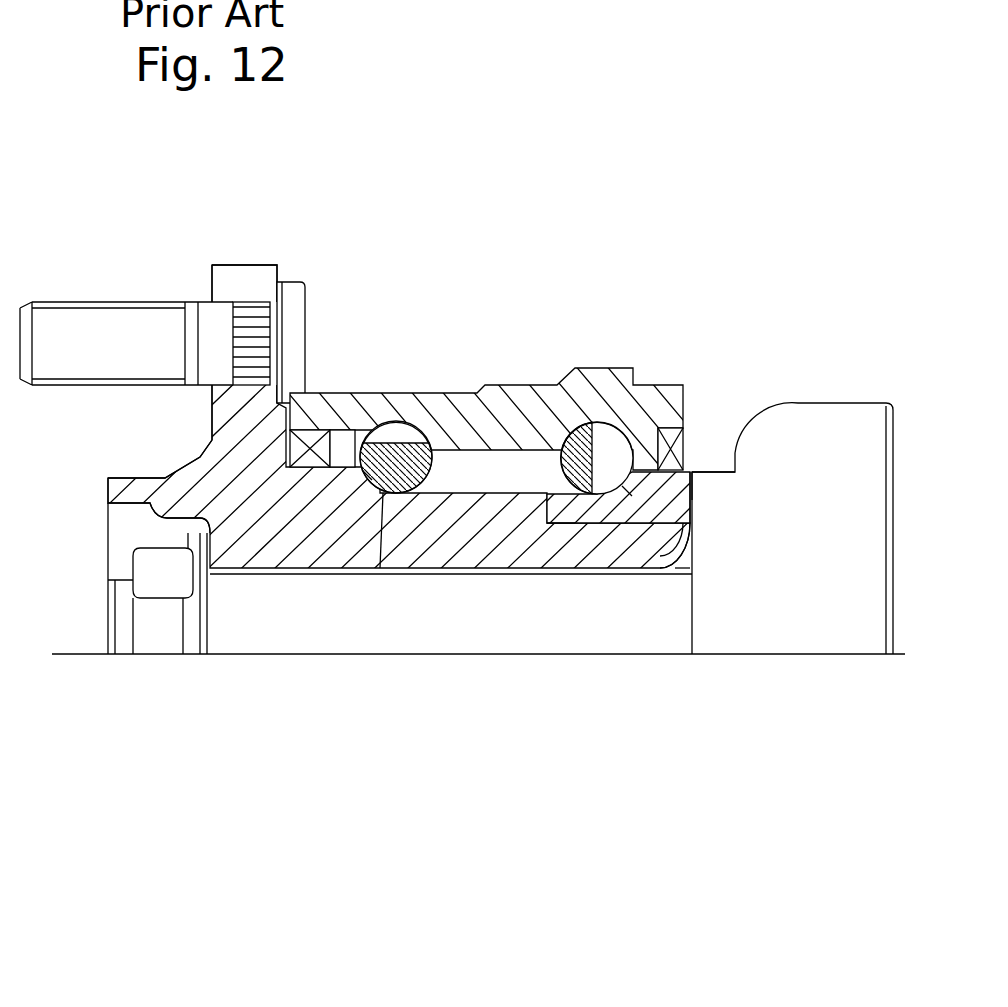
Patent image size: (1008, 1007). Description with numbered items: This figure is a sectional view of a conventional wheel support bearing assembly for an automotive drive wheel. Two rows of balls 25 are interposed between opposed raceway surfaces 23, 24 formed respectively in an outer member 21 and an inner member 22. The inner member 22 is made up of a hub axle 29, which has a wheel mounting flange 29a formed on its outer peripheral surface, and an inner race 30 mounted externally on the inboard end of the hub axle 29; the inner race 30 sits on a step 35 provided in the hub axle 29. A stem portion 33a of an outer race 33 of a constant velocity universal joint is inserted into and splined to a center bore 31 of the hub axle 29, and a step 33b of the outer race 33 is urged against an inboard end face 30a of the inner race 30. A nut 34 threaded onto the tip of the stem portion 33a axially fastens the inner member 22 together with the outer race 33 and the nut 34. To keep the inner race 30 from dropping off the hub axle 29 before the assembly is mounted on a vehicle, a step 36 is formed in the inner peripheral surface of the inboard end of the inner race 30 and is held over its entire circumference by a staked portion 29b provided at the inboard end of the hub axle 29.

The outer member 21 is at (360, 398).
The inner member 22 is at (580, 805).
The raceway surfaces 23 is at (385, 428).
The raceway surfaces 24 is at (377, 467).
The balls 25 is at (415, 422).
The hub axle 29 is at (480, 540).
The wheel mounting flange 29a is at (240, 282).
The staked portion 29b is at (693, 523).
The inner race 30 is at (590, 527).
The inboard end face 30a is at (702, 467).
The center bore 31 is at (213, 440).
The outer race 33 is at (855, 423).
The stem portion 33a is at (417, 635).
The step 33b is at (692, 472).
The nut 34 is at (165, 592).
The step 35 is at (577, 530).
The step 36 is at (693, 577).